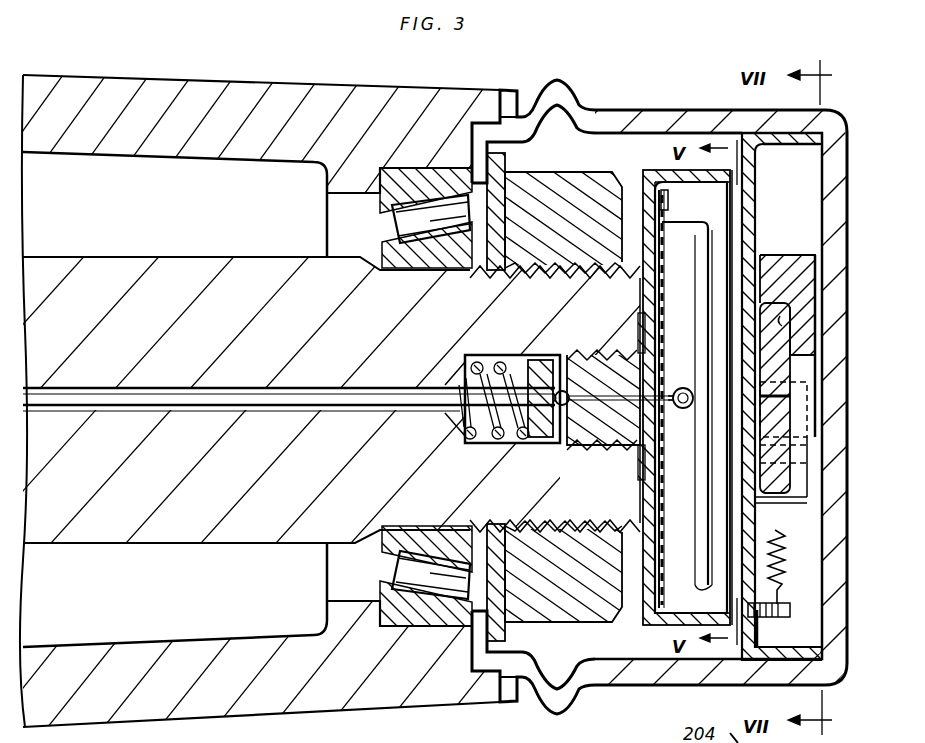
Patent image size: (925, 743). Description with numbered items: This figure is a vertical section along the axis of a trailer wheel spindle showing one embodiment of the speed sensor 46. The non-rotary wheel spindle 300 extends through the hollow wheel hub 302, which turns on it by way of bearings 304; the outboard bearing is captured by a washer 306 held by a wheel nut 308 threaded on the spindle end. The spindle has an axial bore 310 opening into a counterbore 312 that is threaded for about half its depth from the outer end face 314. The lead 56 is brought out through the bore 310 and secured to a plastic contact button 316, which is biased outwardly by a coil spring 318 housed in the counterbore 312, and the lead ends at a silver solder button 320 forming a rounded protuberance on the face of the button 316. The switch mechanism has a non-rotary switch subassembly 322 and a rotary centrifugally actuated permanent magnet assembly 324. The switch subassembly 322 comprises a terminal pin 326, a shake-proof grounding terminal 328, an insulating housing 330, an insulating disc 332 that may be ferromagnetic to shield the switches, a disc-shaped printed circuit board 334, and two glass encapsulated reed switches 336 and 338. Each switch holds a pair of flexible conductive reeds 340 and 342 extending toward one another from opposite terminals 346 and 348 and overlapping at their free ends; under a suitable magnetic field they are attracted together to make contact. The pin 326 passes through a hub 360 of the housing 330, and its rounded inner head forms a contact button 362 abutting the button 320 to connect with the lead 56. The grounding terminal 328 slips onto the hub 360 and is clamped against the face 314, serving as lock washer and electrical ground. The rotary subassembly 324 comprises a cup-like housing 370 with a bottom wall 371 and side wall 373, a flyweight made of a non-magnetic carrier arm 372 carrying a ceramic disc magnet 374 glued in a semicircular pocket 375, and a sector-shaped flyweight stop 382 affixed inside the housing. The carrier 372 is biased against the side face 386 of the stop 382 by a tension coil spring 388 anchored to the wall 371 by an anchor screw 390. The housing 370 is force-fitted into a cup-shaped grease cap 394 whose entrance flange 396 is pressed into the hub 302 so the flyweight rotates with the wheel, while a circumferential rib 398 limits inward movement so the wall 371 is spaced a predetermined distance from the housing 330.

The speed sensor 46 is at (675, 86).
The lead 56 is at (256, 402).
The wheel spindle 300 is at (368, 255).
The wheel hub 302 is at (175, 75).
The bearings 304 is at (300, 212).
The washer 306 is at (472, 160).
The wheel nut 308 is at (536, 176).
The axial bore 310 is at (305, 386).
The counterbore 312 is at (514, 357).
The outer end face 314 is at (630, 290).
The contact button 316 is at (540, 437).
The coil spring 318 is at (467, 448).
The silver solder button 320 is at (561, 458).
The non-rotary switch subassembly 322 is at (645, 150).
The rotary centrifugally actuated permanent magnet assembly 324 is at (738, 124).
The terminal pin 326 is at (605, 358).
The shake-proof grounding terminal 328 is at (637, 467).
The housing 330 is at (643, 212).
The insulating disc 332 is at (694, 265).
The printed circuit board 334 is at (668, 330).
The reed switch 336 is at (684, 412).
The reed switch 338 is at (715, 246).
The reed 340 is at (677, 576).
The reed 342 is at (698, 267).
The terminal prong 346 is at (663, 626).
The terminal prong 348 is at (676, 214).
The hub 360 is at (640, 452).
The contact button 362 is at (562, 407).
The cup-like housing 370 is at (830, 167).
The bottom wall 371 is at (757, 221).
The carrier arm 372 is at (810, 280).
The side wall 373 is at (788, 146).
The ceramic disc magnet 374 is at (800, 440).
The semicircular pocket 375 is at (782, 323).
The flyweight stop 382 is at (806, 487).
The side face 386 is at (798, 455).
The tension coil spring 388 is at (785, 560).
The anchor screw 390 is at (790, 608).
The grease cap 394 is at (653, 691).
The entrance flange 396 is at (494, 128).
The circumferential rib 398 is at (560, 80).